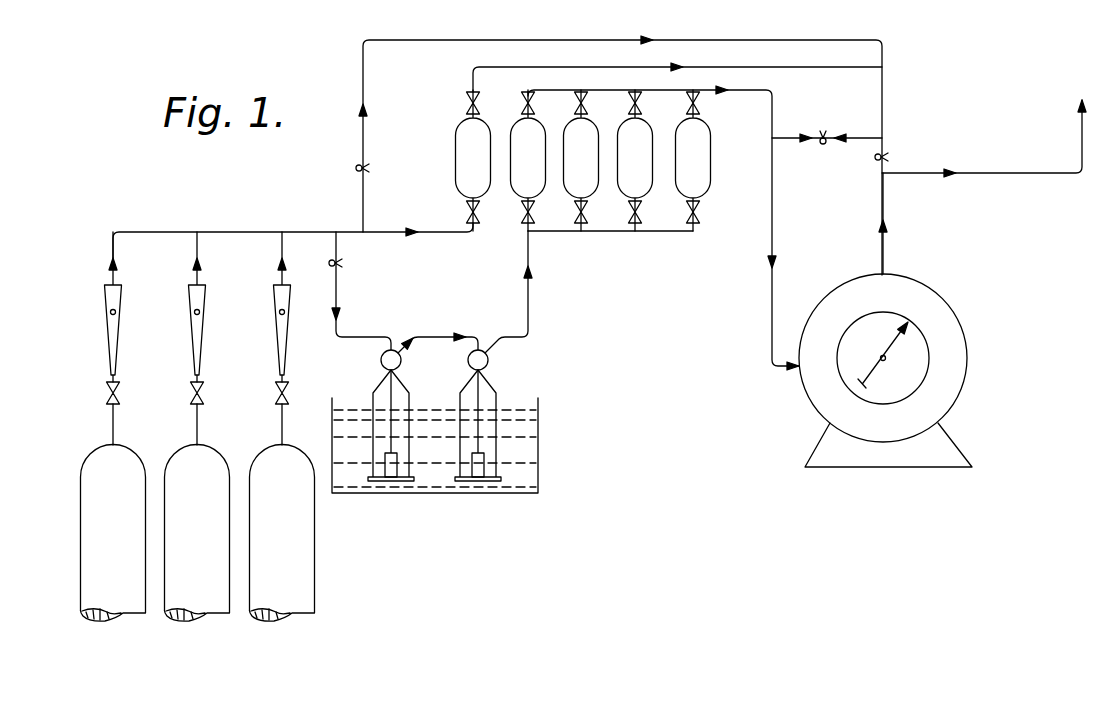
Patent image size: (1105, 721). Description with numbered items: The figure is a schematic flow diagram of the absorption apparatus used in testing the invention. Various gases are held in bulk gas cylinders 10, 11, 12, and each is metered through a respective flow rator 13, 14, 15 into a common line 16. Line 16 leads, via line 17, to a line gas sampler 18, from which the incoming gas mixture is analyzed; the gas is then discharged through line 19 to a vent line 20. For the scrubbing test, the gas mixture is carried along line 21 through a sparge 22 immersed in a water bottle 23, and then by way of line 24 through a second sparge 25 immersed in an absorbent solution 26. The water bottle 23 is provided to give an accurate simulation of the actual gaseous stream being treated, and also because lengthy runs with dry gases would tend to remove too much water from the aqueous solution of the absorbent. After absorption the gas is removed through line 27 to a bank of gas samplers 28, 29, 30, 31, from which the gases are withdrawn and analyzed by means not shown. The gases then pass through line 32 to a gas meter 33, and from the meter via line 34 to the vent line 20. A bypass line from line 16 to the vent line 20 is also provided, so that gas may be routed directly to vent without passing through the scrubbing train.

The bulk gas cylinder 10 is at (95, 583).
The bulk gas cylinder 11 is at (215, 473).
The bulk gas cylinder 12 is at (303, 577).
The flow rator 13 is at (108, 325).
The flow rator 14 is at (193, 325).
The flow rator 15 is at (278, 325).
The line 16 is at (303, 232).
The line 17 is at (375, 232).
The line gas sampler 18 is at (456, 140).
The line 19 is at (755, 67).
The vent line 20 is at (1082, 140).
The line 21 is at (346, 291).
The sparge 22 is at (392, 470).
The water bottle 23 is at (403, 390).
The line 24 is at (441, 334).
The sparge 25 is at (478, 470).
The absorbent solution 26 is at (490, 390).
The line 27 is at (533, 302).
The gas sampler 28 is at (512, 198).
The gas sampler 29 is at (567, 198).
The gas sampler 30 is at (628, 182).
The gas sampler 31 is at (687, 180).
The line 32 is at (772, 127).
The gas meter 33 is at (950, 318).
The line 34 is at (884, 254).